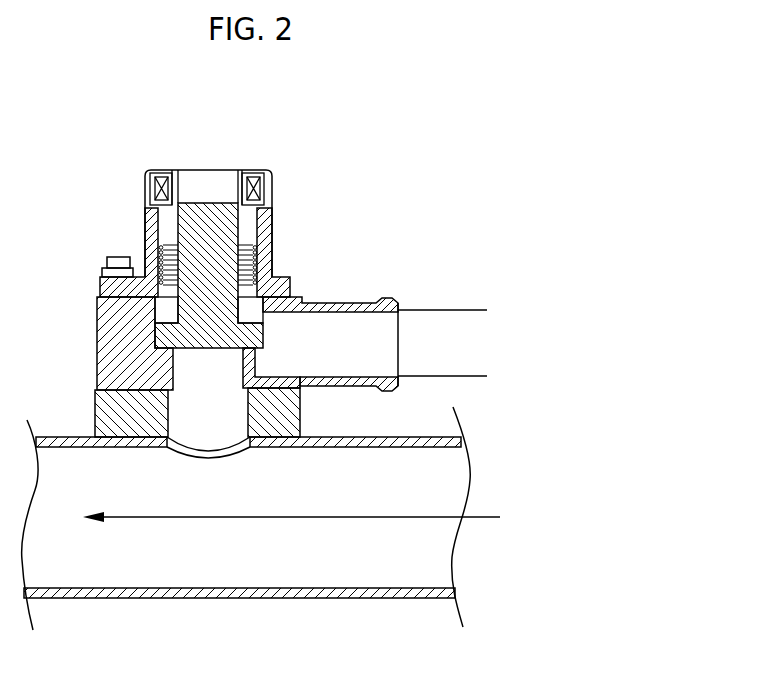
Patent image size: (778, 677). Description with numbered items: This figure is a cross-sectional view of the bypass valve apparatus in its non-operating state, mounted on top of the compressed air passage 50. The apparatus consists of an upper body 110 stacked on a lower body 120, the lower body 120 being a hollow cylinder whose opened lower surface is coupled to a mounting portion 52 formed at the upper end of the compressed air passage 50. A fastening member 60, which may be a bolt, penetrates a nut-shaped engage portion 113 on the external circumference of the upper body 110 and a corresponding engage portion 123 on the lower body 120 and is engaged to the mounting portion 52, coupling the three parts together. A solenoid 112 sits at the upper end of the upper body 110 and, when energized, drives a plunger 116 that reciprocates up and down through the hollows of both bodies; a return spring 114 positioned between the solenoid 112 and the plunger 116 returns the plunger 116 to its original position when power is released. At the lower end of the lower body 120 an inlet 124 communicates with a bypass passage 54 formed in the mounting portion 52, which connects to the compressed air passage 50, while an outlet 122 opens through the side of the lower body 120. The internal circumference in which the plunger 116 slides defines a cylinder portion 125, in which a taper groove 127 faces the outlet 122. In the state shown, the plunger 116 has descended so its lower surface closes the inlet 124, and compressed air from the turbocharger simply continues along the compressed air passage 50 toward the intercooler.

The upper body 110 is at (213, 162).
The solenoid 112 is at (253, 177).
The engage portion 113 is at (100, 285).
The return spring 114 is at (257, 254).
The plunger 116 is at (196, 215).
The lower body 120 is at (84, 362).
The outlet 122 is at (363, 344).
The engage portion 123 is at (99, 333).
The inlet 124 is at (191, 377).
The cylinder portion 125 is at (256, 316).
The taper groove 127 is at (153, 328).
The fastening member 60 is at (120, 256).
The mounting portion 52 is at (287, 413).
The compressed air passage 50 is at (292, 598).
The bypass passage 54 is at (224, 422).